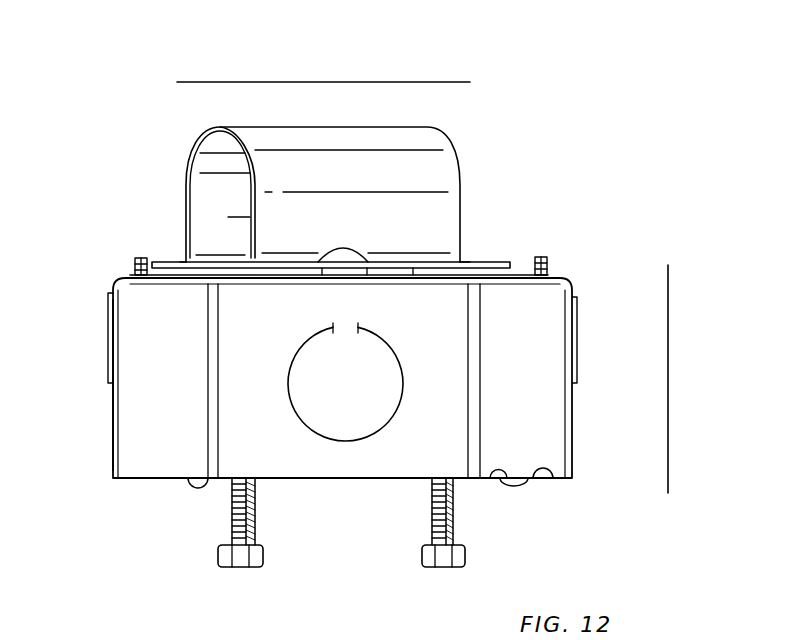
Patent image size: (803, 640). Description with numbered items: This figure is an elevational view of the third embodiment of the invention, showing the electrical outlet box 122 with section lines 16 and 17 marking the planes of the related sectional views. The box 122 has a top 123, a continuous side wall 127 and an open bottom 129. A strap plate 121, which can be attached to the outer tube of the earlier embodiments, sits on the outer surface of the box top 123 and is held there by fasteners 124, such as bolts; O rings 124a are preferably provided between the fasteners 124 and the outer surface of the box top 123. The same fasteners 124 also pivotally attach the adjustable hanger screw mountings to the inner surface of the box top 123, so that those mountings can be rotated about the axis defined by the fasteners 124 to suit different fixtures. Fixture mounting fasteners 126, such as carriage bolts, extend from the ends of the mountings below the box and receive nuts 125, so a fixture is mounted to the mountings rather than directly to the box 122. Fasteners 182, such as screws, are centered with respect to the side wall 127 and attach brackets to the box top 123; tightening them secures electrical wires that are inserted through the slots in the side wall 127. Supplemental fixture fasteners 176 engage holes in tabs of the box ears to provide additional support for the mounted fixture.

The section line 16- 16 is at (680, 487).
The section line 17- 17 is at (468, 72).
The strap plate 121 is at (447, 198).
The electrical outlet box 122 is at (603, 428).
The box top 123 is at (516, 275).
The fasteners 124 is at (333, 250).
The O rings 124a is at (368, 272).
The nuts 125 is at (245, 563).
The fixture mounting fasteners 126 is at (235, 520).
The side wall 127 is at (133, 365).
The open bottom 129 is at (329, 490).
The supplemental fixture fasteners 176 is at (195, 488).
The fasteners 182 is at (137, 258).